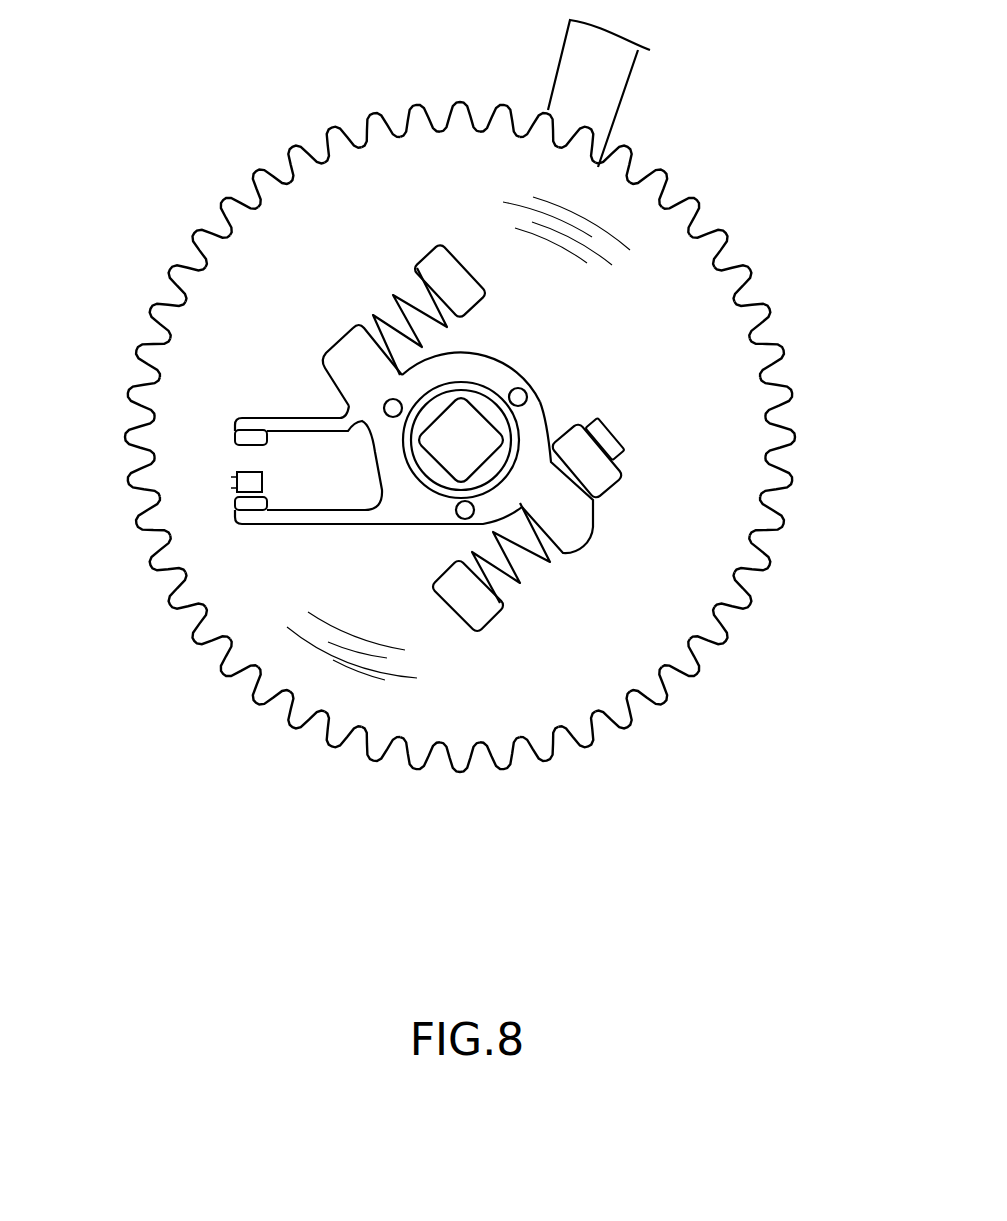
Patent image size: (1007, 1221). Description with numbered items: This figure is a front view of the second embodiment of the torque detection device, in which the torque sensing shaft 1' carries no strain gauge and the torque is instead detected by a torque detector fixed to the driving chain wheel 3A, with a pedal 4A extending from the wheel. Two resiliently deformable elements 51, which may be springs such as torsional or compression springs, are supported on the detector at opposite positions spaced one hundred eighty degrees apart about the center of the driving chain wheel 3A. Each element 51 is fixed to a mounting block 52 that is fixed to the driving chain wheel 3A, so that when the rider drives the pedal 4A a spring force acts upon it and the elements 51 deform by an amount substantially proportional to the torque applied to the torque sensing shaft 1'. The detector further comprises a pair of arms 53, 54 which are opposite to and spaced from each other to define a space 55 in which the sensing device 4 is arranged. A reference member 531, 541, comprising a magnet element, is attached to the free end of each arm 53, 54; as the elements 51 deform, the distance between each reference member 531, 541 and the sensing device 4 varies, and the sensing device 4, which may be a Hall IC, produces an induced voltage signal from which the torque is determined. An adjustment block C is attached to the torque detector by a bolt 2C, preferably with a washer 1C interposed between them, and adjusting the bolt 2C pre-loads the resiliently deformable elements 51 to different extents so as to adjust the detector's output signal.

The driving chain wheel 3A is at (658, 240).
The pedal 4A is at (605, 80).
The torque sensing shaft 1' is at (627, 406).
The washer 1C is at (612, 443).
The adjustment block C is at (610, 470).
The bolt 2C is at (593, 497).
The resiliently deformable element 51 is at (400, 295).
The mounting block 52 is at (450, 265).
The arm 53 is at (272, 425).
The reference member 531 is at (248, 436).
The sensing device 4 is at (250, 482).
The reference member 541 is at (250, 505).
The arm 54 is at (300, 517).
The space 55 is at (330, 778).